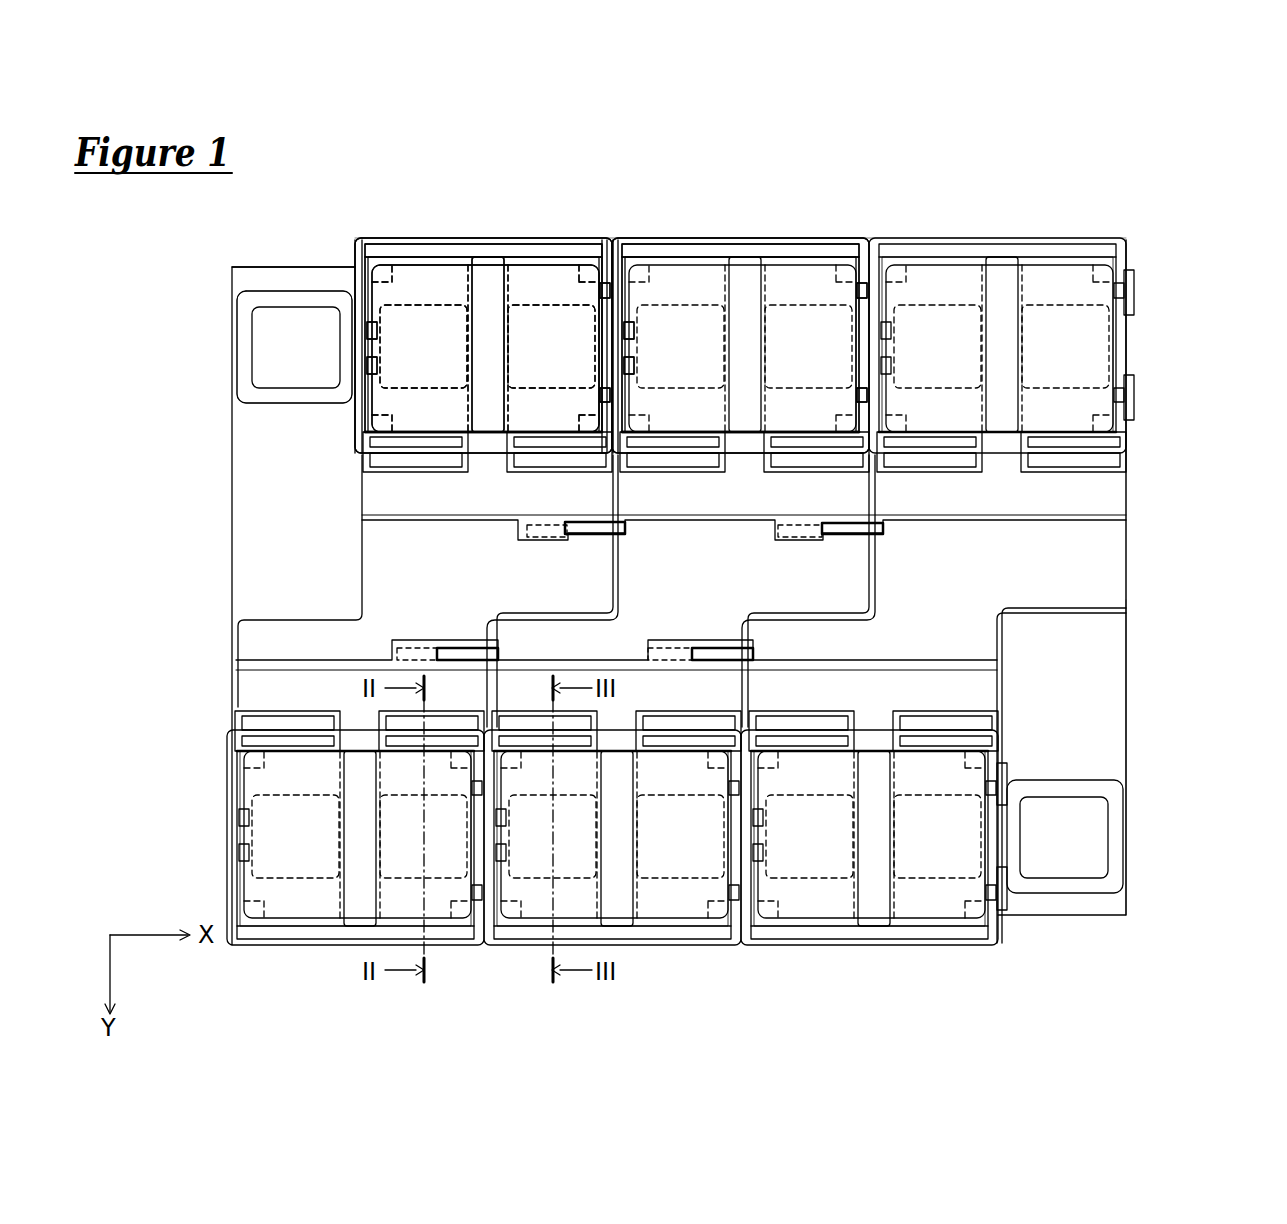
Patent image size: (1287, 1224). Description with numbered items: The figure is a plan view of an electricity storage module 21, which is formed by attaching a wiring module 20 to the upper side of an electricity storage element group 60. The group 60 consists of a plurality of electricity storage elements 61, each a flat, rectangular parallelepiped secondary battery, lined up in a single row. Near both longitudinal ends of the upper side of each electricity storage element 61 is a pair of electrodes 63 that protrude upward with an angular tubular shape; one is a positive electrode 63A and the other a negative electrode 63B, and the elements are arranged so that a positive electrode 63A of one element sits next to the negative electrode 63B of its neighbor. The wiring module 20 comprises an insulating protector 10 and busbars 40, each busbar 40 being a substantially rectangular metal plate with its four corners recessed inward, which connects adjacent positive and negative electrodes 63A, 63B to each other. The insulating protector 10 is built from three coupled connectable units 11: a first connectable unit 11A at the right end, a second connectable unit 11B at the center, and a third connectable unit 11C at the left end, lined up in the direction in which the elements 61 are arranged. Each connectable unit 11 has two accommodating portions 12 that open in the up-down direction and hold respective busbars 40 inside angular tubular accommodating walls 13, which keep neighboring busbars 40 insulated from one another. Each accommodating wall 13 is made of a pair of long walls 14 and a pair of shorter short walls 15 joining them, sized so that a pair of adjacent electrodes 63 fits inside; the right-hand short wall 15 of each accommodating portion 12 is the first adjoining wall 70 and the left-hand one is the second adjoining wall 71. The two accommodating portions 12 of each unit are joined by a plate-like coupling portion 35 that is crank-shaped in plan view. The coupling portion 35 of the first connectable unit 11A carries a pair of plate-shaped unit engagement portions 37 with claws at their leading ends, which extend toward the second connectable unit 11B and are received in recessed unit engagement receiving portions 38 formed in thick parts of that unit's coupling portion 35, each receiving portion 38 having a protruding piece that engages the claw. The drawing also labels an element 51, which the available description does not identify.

The insulating protector 10 is at (1115, 557).
The connectable unit 11 is at (775, 304).
The first connectable unit 11A is at (1000, 290).
The second connectable unit 11B is at (740, 290).
The third connectable unit 11C is at (483, 290).
The accommodating portion 12 is at (445, 268).
The accommodating wall 13 is at (380, 242).
The long wall 14 is at (548, 242).
The short wall 15 is at (698, 596).
The wiring module 20 is at (1110, 575).
The electricity storage module 21 is at (1148, 220).
The coupling portion 35 is at (400, 577).
The unit engagement portion 37 is at (580, 522).
The unit engagement receiving portion 38 is at (525, 542).
The busbar 40 is at (488, 285).
The terminal 51 is at (350, 270).
The electricity storage element group 60 is at (1108, 743).
The electricity storage element 61 is at (270, 447).
The electrode 63 is at (753, 654).
The positive electrode 63A is at (1055, 870).
The negative electrode 63B is at (293, 340).
The first adjoining wall 70 is at (608, 282).
The second adjoining wall 71 is at (632, 245).